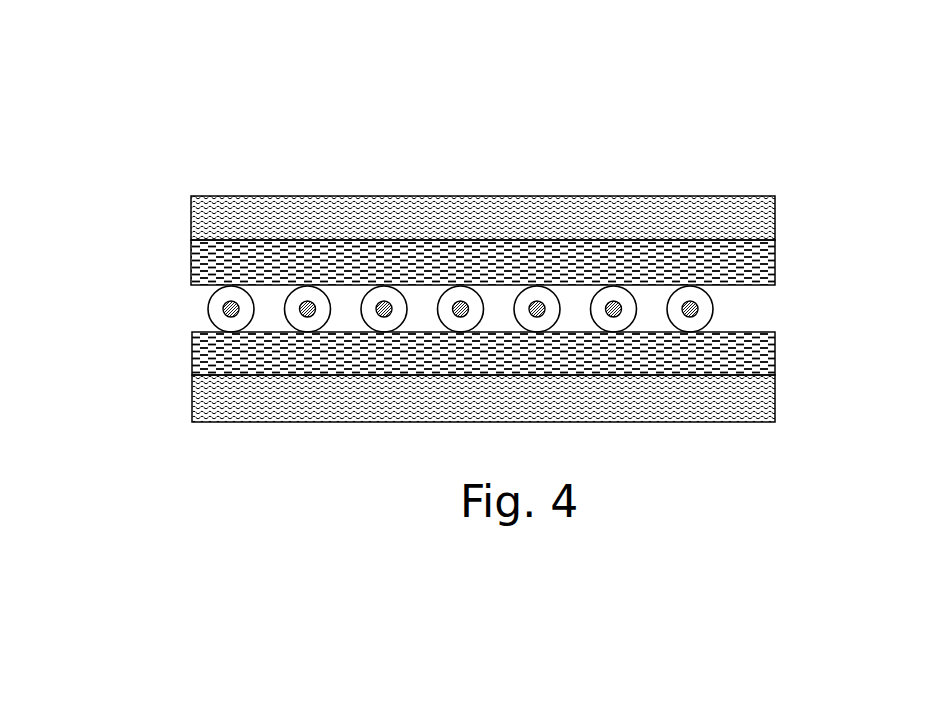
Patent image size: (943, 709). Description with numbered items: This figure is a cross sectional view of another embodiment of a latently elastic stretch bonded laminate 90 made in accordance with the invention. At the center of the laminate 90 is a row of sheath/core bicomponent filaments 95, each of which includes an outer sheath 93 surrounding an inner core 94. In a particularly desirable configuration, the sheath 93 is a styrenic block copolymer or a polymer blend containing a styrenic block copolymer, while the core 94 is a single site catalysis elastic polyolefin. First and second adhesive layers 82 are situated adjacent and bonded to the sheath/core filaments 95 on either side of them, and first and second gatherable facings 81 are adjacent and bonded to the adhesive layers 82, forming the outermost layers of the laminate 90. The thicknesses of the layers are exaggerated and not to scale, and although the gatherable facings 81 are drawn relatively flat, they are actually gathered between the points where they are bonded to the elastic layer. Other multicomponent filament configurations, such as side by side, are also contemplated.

The stretch bonded laminate 90 is at (467, 150).
The gatherable facing 81 is at (695, 210).
The adhesive layer 82 is at (758, 268).
The sheath 93 is at (215, 300).
The core 94 is at (238, 303).
The sheath/core bicomponent filament 95 is at (446, 204).